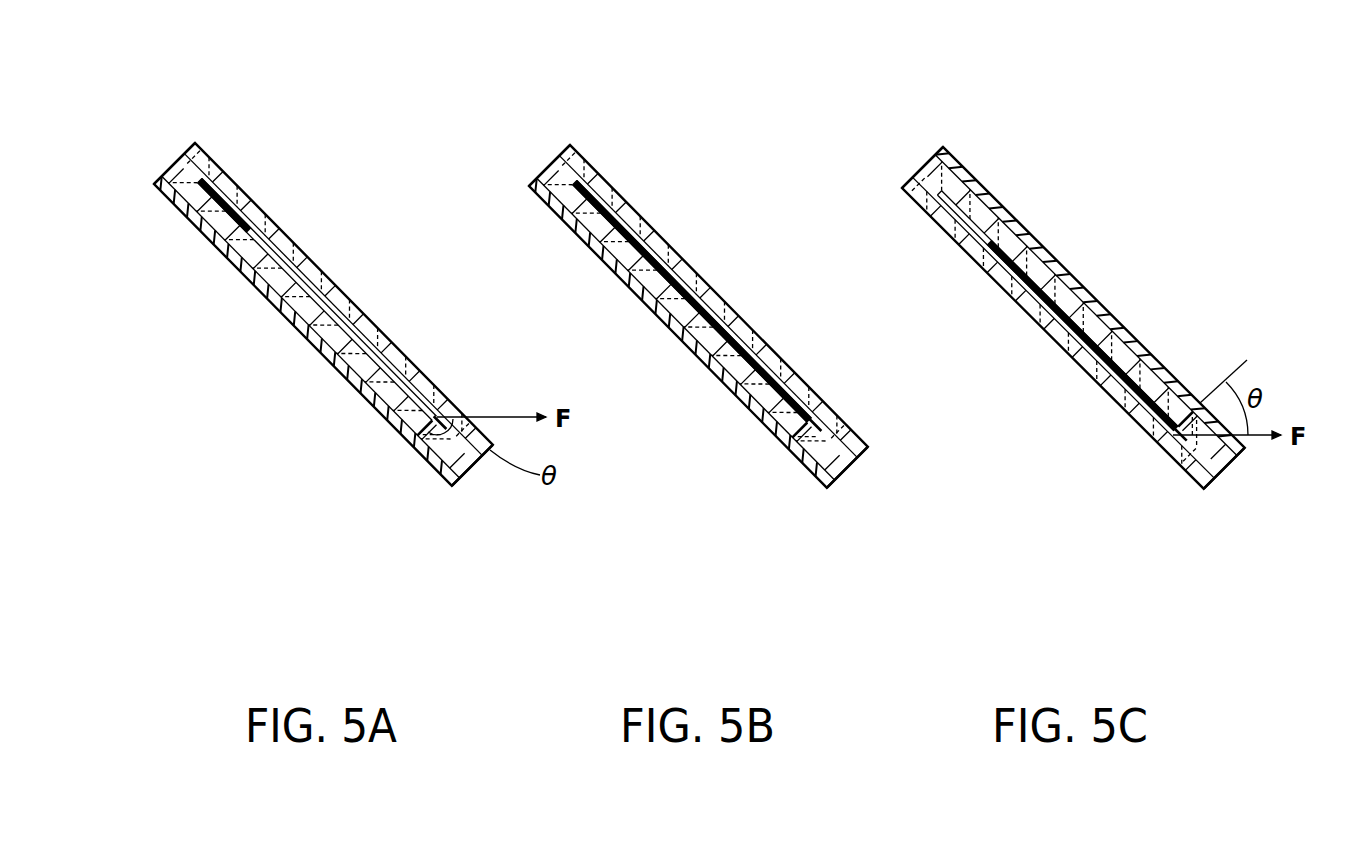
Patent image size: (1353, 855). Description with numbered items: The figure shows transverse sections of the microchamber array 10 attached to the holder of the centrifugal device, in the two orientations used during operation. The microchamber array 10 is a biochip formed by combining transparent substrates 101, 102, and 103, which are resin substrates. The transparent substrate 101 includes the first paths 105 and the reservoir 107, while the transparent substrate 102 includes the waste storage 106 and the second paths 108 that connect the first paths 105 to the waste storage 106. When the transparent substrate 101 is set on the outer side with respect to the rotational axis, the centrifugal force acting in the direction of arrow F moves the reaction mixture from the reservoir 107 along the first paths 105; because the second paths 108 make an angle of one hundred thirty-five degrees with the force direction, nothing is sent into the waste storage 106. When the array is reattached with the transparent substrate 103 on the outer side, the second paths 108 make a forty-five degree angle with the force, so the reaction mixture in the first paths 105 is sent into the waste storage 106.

In FIG. 5A, the microchamber array 10 is at (289, 618).
In FIG. 5B, the microchamber array 10 is at (664, 618).
In FIG. 5C, the microchamber array 10 is at (1061, 618).
In FIG. 5A, the transparent substrate 101 is at (178, 157).
In FIG. 5B, the transparent substrate 101 is at (555, 157).
In FIG. 5C, the transparent substrate 101 is at (920, 183).
In FIG. 5A, the transparent substrate 102 is at (167, 167).
In FIG. 5B, the transparent substrate 102 is at (545, 168).
In FIG. 5C, the transparent substrate 102 is at (930, 157).
In FIG. 5A, the transparent substrate 103 is at (168, 202).
In FIG. 5B, the transparent substrate 103 is at (547, 202).
In FIG. 5C, the transparent substrate 103 is at (1017, 223).
In FIG. 5A, the first paths 105 is at (343, 320).
In FIG. 5B, the first paths 105 is at (718, 320).
In FIG. 5C, the first paths 105 is at (1080, 320).
In FIG. 5A, the waste storage 106 is at (428, 460).
In FIG. 5B, the waste storage 106 is at (805, 455).
In FIG. 5C, the waste storage 106 is at (1203, 493).
In FIG. 5A, the reservoir 107 is at (237, 195).
In FIG. 5B, the reservoir 107 is at (613, 195).
In FIG. 5C, the reservoir 107 is at (963, 207).
In FIG. 5A, the second paths 108 is at (388, 421).
In FIG. 5B, the second paths 108 is at (765, 425).
In FIG. 5C, the second paths 108 is at (1140, 415).